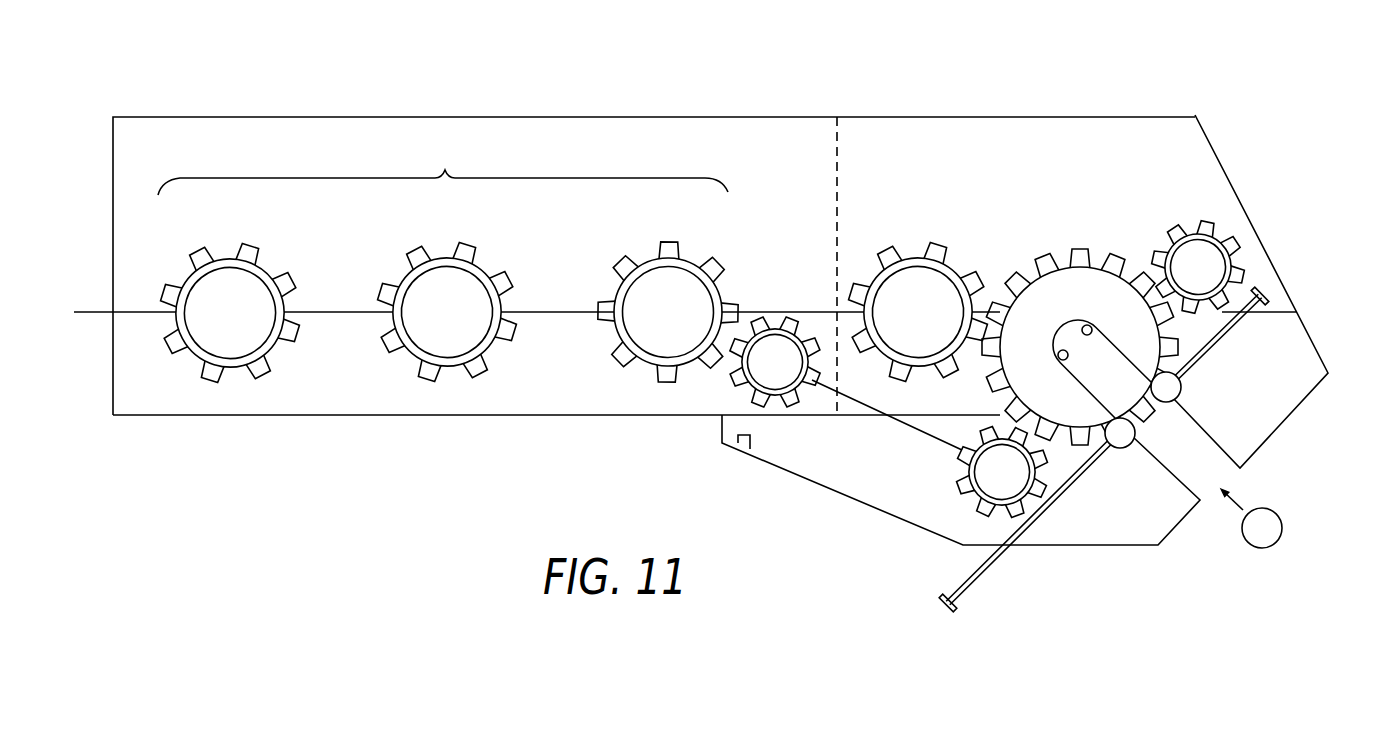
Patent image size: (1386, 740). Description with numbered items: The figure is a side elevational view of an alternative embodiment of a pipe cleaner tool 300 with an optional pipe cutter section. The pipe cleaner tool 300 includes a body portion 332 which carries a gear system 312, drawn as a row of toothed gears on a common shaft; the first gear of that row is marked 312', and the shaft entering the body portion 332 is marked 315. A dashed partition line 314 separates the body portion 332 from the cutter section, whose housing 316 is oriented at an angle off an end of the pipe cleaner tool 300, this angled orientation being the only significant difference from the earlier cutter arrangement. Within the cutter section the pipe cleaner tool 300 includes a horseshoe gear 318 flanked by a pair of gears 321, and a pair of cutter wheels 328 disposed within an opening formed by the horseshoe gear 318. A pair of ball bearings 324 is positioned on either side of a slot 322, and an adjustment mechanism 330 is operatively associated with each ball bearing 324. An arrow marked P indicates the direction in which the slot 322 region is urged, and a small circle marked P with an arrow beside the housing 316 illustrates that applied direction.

The pipe cleaner tool 300 is at (709, 349).
The gear system 312 is at (441, 268).
The first gear 312' is at (238, 296).
The partition line 314 is at (835, 287).
The drive shaft 315 is at (97, 310).
The right housing portion 316 is at (1162, 122).
The horseshoe gear 318 is at (1080, 250).
The gears 321 is at (737, 378).
The slot 322 is at (1172, 437).
The ball bearings 324 is at (1180, 395).
The cutter wheels 328 is at (1063, 355).
The adjustment mechanism 330 is at (1222, 348).
The body portion 332 is at (150, 127).
The applied force P is at (1263, 532).